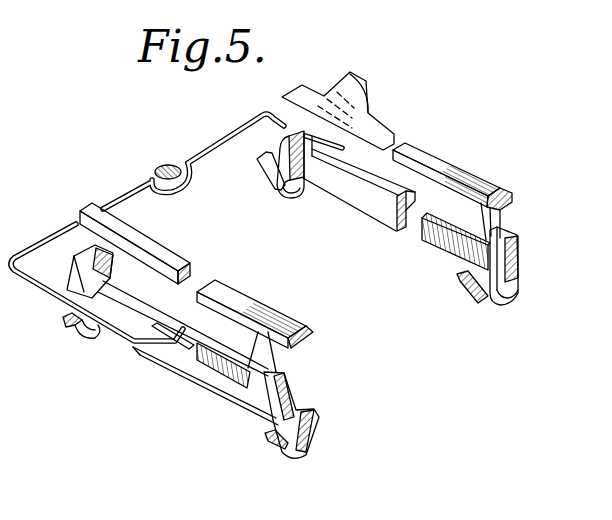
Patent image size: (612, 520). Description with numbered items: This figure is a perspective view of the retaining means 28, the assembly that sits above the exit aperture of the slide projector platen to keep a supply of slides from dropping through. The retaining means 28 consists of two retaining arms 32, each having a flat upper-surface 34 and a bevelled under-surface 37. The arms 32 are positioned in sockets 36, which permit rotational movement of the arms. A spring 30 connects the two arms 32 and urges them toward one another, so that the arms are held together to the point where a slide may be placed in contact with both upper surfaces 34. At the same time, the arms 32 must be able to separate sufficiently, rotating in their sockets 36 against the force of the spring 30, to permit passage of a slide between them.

The retaining means 28 is at (105, 172).
The spring 30 is at (225, 138).
The retaining arms 32 is at (250, 294).
The flat upper-surface 34 is at (160, 256).
The sockets 36 is at (265, 447).
The bevelled under-surface 37 is at (200, 258).